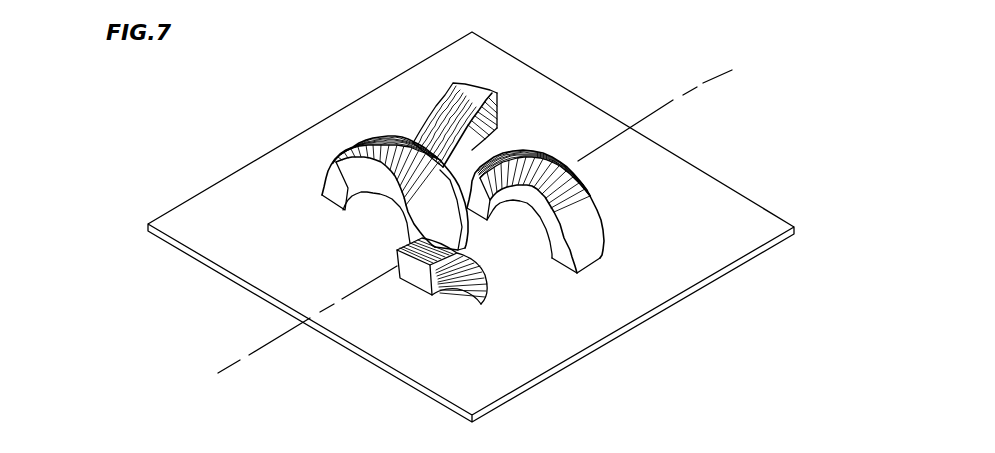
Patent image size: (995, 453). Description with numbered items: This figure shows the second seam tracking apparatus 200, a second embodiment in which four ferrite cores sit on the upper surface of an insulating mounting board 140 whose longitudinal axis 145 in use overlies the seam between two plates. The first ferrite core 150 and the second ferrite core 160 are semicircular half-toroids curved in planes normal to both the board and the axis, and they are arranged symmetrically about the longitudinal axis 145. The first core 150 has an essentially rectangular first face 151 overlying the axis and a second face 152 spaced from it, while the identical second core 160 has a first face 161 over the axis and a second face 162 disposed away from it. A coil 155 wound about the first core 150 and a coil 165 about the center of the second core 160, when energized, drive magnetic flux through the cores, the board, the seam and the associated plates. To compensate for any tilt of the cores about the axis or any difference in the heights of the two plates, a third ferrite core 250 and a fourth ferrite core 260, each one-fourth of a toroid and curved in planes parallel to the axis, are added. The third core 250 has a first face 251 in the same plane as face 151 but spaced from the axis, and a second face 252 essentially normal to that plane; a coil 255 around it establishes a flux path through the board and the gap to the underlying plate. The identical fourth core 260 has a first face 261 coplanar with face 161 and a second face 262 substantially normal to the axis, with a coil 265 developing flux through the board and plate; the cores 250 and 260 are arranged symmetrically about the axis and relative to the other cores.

The second seam tracking apparatus 200 is at (81, 87).
The mounting board 140 is at (234, 196).
The longitudinal axis 145 is at (262, 377).
The first ferrite core 150 is at (395, 170).
The first face 151 is at (472, 248).
The second face 152 is at (329, 208).
The coil 155 is at (335, 185).
The second ferrite core 160 is at (564, 198).
The first face 161 is at (486, 222).
The second face 162 is at (597, 273).
The coil 165 is at (535, 165).
The third ferrite core 250 is at (454, 290).
The first face 251 is at (473, 308).
The second face 252 is at (415, 273).
The coil 255 is at (491, 276).
The fourth ferrite core 260 is at (472, 86).
The first face 261 is at (482, 163).
The second face 262 is at (498, 112).
The coil 265 is at (436, 116).